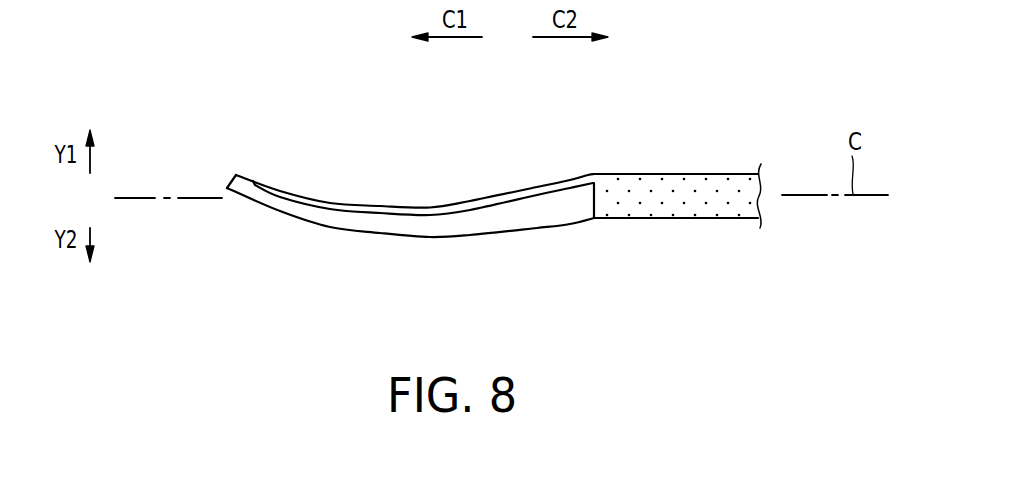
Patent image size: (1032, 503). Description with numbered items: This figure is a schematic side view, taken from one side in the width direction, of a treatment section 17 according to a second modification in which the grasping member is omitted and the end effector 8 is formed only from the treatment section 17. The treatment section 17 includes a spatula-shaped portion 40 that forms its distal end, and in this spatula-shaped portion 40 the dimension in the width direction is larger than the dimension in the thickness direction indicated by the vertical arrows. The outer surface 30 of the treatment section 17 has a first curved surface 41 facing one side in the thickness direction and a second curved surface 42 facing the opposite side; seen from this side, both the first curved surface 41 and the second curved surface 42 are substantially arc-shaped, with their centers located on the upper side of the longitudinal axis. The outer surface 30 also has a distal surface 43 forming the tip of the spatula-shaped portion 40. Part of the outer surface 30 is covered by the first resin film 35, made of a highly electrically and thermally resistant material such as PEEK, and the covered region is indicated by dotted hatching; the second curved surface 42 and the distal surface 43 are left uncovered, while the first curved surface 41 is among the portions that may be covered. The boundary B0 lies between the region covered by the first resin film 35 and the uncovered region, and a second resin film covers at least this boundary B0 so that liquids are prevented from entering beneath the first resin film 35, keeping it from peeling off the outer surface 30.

The treatment section 17 is at (606, 134).
The end effector 8 is at (468, 232).
The outer surface 30 is at (294, 240).
The spatula-shaped portion 40 is at (382, 236).
The first curved surface 41 is at (418, 205).
The second curved surface 42 is at (436, 239).
The distal surface 43 is at (228, 181).
The first resin film 35 is at (680, 213).
The boundary B0 is at (594, 203).